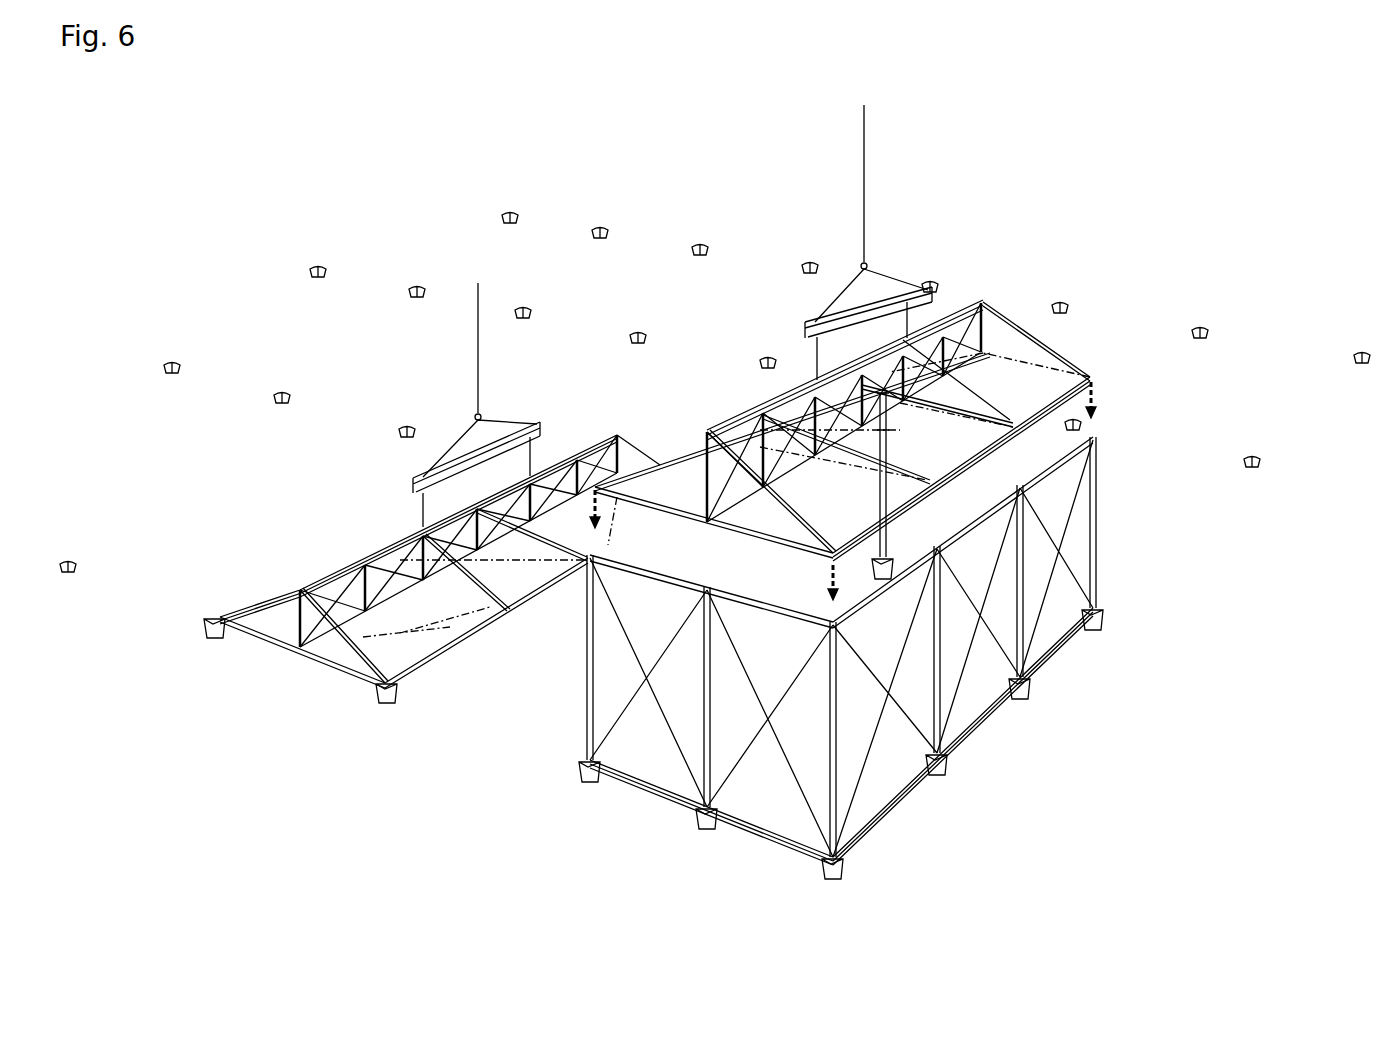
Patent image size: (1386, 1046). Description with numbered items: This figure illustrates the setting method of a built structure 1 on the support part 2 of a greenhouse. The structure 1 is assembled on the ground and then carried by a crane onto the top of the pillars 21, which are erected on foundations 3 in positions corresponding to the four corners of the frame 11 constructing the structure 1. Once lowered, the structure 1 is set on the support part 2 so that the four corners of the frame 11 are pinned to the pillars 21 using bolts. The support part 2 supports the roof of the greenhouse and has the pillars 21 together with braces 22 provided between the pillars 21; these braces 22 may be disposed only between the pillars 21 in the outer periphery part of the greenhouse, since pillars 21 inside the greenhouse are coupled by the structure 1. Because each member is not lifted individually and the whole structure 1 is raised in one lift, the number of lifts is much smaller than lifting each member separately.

The structure 1 is at (655, 494).
The frame 11 is at (722, 530).
The support part 2 is at (852, 629).
The pillars 21 is at (885, 528).
The braces 22 is at (665, 730).
The foundations 3 is at (1102, 610).